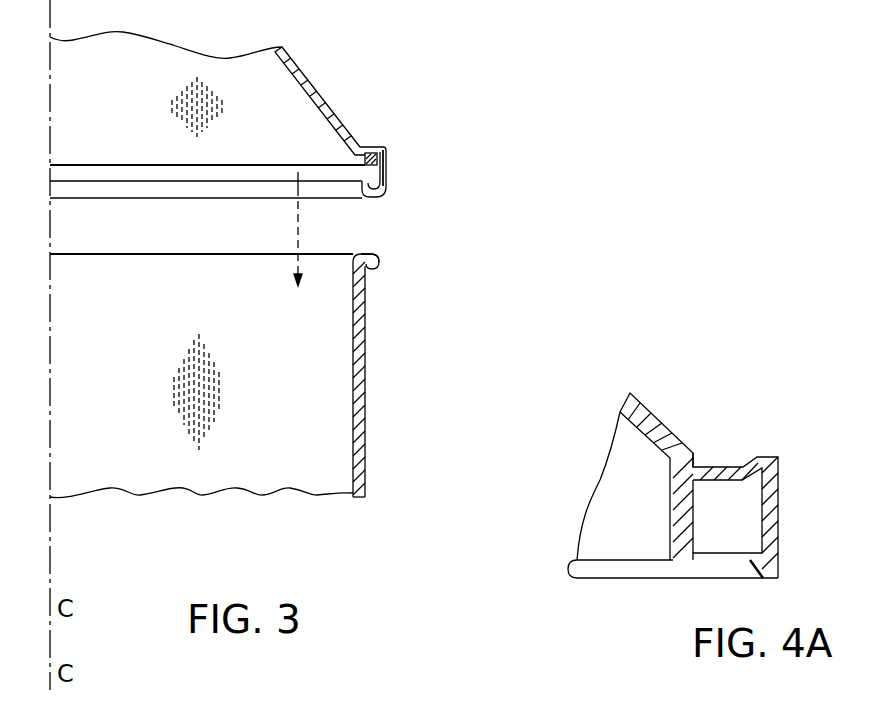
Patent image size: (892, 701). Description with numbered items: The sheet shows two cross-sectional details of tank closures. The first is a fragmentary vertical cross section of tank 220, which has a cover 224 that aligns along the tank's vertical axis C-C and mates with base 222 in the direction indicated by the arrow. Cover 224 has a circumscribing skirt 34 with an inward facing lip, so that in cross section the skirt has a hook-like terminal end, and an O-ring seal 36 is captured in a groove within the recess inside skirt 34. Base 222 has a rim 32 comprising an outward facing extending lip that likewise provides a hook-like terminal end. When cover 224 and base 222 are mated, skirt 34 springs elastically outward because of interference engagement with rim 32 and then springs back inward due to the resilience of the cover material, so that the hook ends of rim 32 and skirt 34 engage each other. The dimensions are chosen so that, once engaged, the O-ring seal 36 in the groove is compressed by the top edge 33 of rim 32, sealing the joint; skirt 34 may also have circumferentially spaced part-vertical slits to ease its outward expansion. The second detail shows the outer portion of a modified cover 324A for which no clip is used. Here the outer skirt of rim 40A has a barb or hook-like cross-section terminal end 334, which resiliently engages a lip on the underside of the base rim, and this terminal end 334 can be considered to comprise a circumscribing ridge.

In FIG. 3, the cover 224 is at (323, 99).
In FIG. 3, the O-ring seal 36 is at (366, 167).
In FIG. 3, the skirt 34 is at (400, 281).
In FIG. 3, the top edge 33 is at (371, 255).
In FIG. 3, the rim 32 is at (378, 268).
In FIG. 3, the base 222 is at (366, 403).
In FIG. 3, the tank 220 is at (506, 237).
In FIG. 4A, the modified cover 324A is at (657, 418).
In FIG. 4A, the rim 40A is at (786, 503).
In FIG. 4A, the terminal end 334 is at (780, 570).